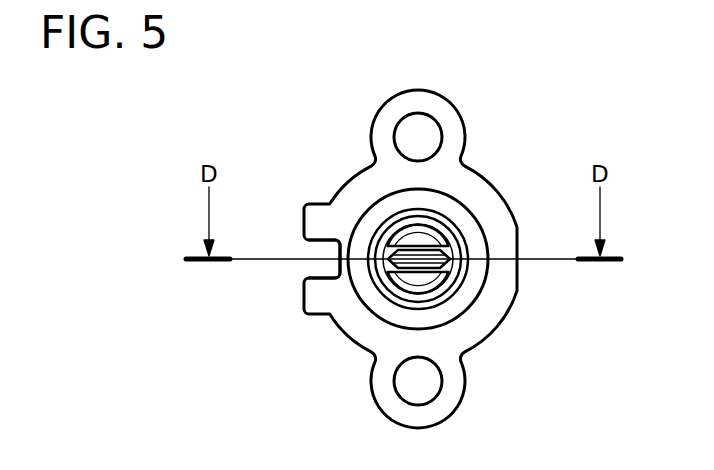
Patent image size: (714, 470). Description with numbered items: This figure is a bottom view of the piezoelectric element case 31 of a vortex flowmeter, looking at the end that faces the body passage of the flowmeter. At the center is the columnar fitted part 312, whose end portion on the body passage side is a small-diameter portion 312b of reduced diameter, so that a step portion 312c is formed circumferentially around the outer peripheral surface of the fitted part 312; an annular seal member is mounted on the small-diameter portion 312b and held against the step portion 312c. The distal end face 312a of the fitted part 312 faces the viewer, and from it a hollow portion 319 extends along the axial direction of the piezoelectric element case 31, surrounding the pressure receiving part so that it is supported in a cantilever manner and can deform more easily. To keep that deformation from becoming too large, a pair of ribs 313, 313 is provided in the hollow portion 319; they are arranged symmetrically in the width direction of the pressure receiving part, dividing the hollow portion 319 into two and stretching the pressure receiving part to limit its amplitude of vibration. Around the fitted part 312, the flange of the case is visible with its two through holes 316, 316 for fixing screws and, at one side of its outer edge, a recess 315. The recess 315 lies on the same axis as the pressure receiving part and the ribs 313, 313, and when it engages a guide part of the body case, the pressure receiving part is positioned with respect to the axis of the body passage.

The piezoelectric element case 31 is at (571, 96).
The fitted part 312 is at (460, 198).
The distal end face 312a is at (462, 318).
The small-diameter portion 312b is at (455, 262).
The step portion 312c is at (462, 224).
The ribs 313 is at (450, 282).
The recess 315 is at (312, 274).
The through holes 316 is at (432, 126).
The hollow portion 319 is at (398, 237).